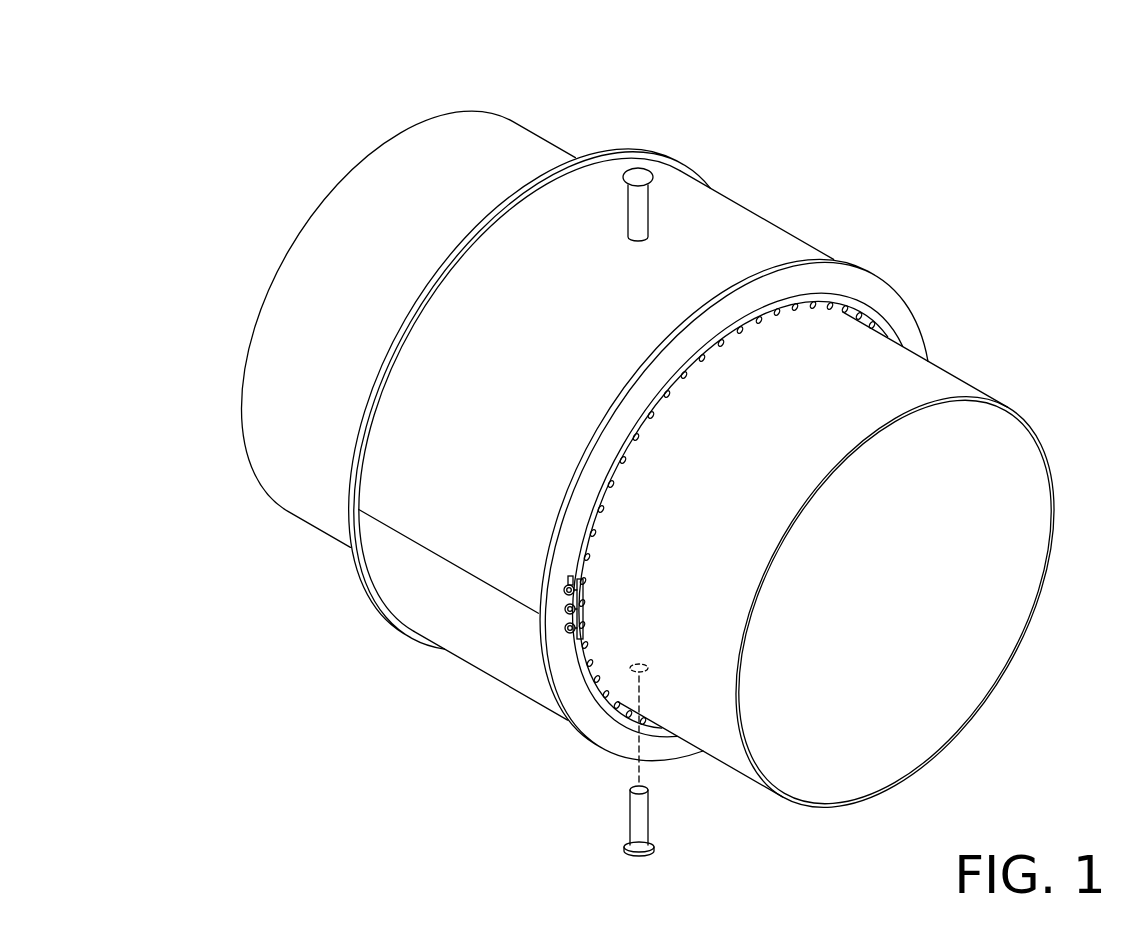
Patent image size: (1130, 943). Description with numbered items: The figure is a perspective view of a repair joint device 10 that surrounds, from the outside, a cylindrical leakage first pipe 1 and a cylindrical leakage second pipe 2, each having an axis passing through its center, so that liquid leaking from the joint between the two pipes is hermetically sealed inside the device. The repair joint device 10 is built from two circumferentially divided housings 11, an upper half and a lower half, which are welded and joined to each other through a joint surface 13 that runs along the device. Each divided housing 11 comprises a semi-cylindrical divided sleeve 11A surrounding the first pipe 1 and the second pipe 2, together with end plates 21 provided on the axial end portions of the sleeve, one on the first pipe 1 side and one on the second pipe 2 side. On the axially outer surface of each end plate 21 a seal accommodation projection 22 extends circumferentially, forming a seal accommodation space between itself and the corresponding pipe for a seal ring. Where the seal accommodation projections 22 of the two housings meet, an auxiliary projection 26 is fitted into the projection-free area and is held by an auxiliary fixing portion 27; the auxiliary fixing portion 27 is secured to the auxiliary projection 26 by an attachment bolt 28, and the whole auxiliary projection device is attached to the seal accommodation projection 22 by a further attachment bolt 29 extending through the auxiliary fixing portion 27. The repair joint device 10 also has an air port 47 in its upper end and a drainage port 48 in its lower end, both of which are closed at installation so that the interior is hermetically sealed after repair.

The first pipe 1 is at (960, 378).
The second pipe 2 is at (525, 123).
The repair joint device 10 is at (680, 457).
The divided housing 11 is at (605, 433).
The divided sleeve 11A is at (773, 220).
The joint surface 13 is at (427, 545).
The end plate 21 is at (632, 145).
The seal accommodation projection 22 is at (883, 317).
The auxiliary projection 26 is at (583, 606).
The auxiliary fixing portion 27 is at (583, 619).
The attachment bolt 28 is at (565, 606).
The attachment bolt 29 is at (563, 633).
The air port 47 is at (635, 212).
The drainage port 48 is at (650, 818).